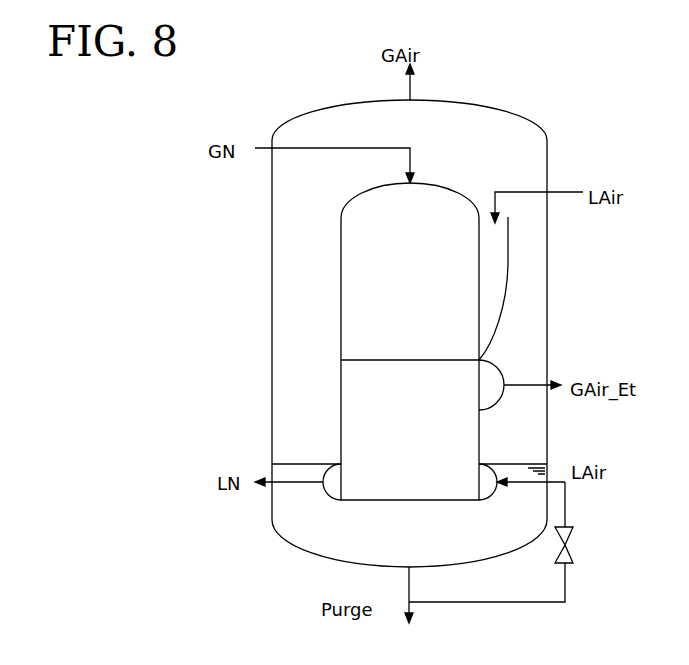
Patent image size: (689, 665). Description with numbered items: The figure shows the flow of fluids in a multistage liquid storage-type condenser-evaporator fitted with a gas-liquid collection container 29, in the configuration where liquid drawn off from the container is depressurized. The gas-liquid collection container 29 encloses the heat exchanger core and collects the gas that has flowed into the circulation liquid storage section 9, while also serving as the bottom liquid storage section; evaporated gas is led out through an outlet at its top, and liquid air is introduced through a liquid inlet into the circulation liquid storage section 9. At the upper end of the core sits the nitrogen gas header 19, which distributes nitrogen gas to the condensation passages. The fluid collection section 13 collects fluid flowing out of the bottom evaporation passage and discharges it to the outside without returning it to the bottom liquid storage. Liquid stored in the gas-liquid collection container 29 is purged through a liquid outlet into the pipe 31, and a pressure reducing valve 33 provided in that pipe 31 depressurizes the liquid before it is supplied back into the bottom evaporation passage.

The gas-liquid collection container 29 is at (513, 112).
The nitrogen gas header 19 is at (352, 198).
The circulation liquid storage section 9 is at (502, 274).
The fluid collection section 13 is at (500, 373).
The pressure reducing valve 33 is at (573, 549).
The pipe 31 is at (535, 602).